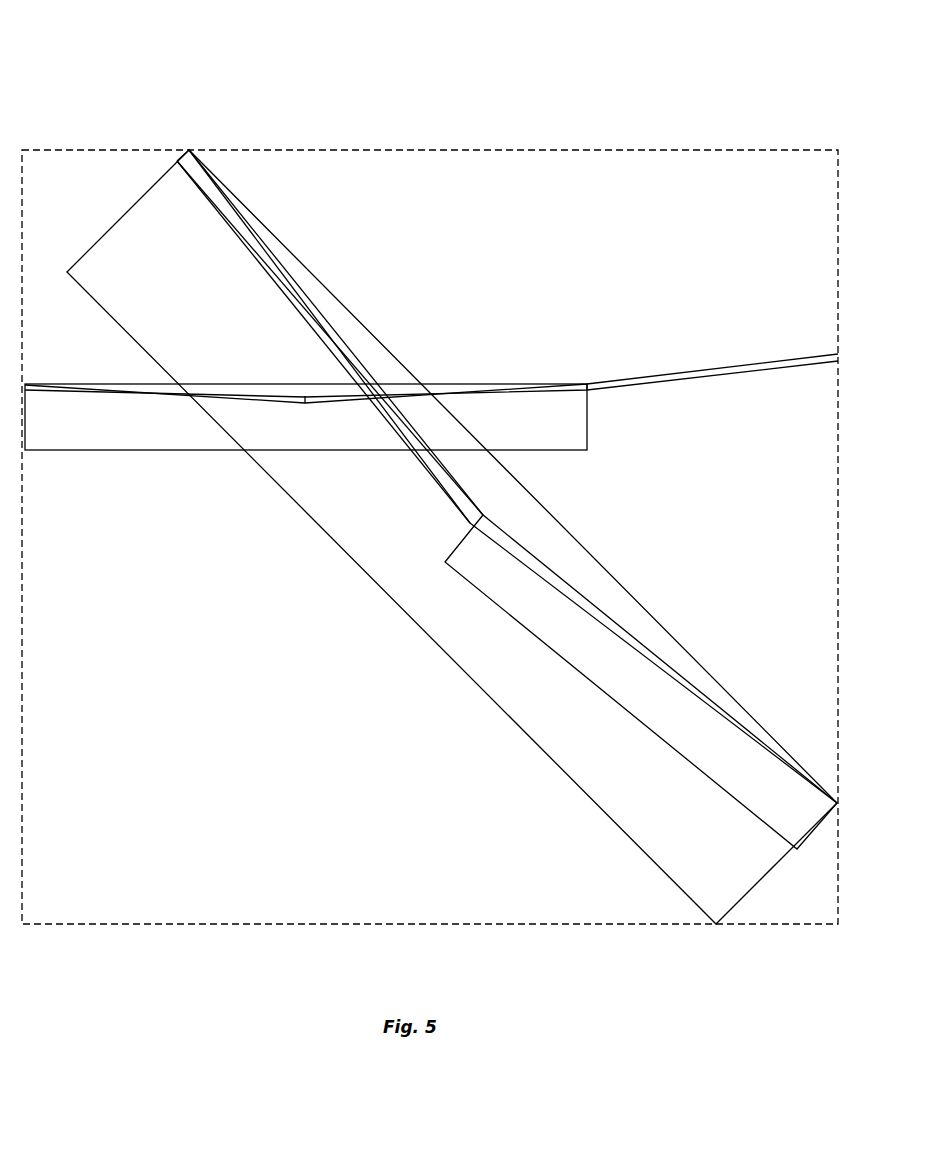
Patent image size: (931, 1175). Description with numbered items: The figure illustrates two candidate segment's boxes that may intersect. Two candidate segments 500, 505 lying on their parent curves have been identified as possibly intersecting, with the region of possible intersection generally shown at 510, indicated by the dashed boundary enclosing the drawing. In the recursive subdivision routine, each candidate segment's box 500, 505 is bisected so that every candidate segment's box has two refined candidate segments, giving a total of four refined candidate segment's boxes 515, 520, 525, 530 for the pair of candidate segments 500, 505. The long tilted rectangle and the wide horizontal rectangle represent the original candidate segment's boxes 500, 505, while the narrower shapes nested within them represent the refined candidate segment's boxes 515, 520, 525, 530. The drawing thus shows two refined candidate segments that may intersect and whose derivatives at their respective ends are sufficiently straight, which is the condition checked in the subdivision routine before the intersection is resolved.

The candidate segment's box 500 is at (303, 452).
The candidate segment's box 505 is at (390, 598).
The possible intersection 510 is at (430, 148).
The refined candidate segment's box 515 is at (319, 300).
The refined candidate segment's box 520 is at (661, 655).
The refined candidate segment's box 525 is at (463, 382).
The refined candidate segment's box 530 is at (113, 401).